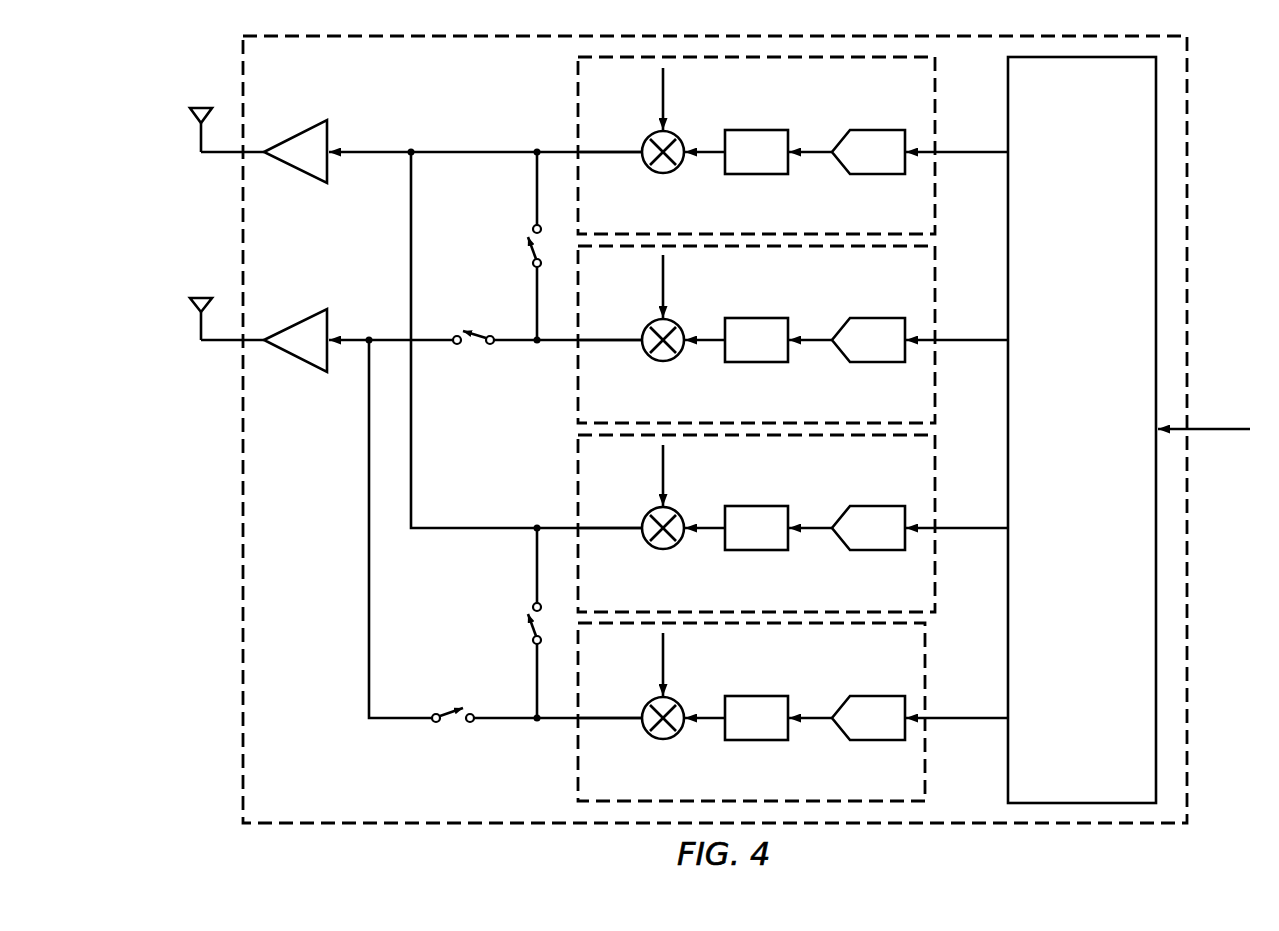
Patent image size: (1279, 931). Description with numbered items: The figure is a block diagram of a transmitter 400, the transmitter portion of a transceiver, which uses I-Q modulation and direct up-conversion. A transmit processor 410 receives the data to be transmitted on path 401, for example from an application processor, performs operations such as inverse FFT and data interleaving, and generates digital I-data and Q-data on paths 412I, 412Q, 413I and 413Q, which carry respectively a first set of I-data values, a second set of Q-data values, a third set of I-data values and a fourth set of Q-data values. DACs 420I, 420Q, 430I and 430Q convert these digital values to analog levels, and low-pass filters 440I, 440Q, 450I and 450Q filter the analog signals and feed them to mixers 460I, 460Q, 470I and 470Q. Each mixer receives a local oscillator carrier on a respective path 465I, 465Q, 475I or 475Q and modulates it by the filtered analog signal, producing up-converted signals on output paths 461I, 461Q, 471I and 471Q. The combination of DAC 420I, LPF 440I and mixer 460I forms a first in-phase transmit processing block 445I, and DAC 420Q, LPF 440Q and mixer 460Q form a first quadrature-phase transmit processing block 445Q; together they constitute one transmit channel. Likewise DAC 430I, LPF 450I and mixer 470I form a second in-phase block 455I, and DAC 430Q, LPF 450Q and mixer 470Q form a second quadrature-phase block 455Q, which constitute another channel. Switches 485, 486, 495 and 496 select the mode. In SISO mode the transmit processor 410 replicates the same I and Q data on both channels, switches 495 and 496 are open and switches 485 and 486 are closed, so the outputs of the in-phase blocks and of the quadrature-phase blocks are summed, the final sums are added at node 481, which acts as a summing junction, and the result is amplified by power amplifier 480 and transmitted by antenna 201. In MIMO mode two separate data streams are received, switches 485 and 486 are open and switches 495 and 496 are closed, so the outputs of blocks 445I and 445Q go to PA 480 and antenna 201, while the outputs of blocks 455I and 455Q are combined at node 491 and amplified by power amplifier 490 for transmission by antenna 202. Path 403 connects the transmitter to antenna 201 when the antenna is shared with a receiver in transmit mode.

The antenna 201 is at (200, 107).
The antenna 202 is at (200, 297).
The transmitter 400 is at (1190, 230).
The path 401 is at (1216, 428).
The path 403 is at (223, 154).
The transmit processor 410 is at (1063, 472).
The path 412I is at (962, 150).
The path 412Q is at (960, 530).
The path 413I is at (962, 338).
The path 413Q is at (960, 720).
The digital-to-analog converter 420I is at (870, 129).
The digital-to-analog converter 420Q is at (875, 550).
The digital-to-analog converter 430I is at (870, 317).
The digital-to-analog converter 430Q is at (875, 740).
The low-pass filter 440I is at (755, 174).
The low-pass filter 440Q is at (755, 550).
The first in-phase transmit processing block 445I is at (577, 98).
The first quadrature-phase transmit processing block 445Q is at (577, 473).
The low-pass filter 450I is at (755, 362).
The low-pass filter 450Q is at (755, 740).
The second in-phase transmit processing block 455I is at (577, 384).
The second quadrature-phase transmit processing block 455Q is at (577, 761).
The mixer 460I is at (667, 173).
The mixer 460Q is at (665, 549).
The path 461I is at (627, 149).
The path 461Q is at (627, 526).
The local oscillator signal path 465I is at (665, 102).
The local oscillator signal path 465Q is at (665, 481).
The mixer 470I is at (667, 361).
The mixer 470Q is at (665, 739).
The path 471I is at (627, 337).
The path 471Q is at (627, 716).
The local oscillator signal path 475I is at (665, 292).
The local oscillator signal path 475Q is at (665, 669).
The power amplifier 480 is at (295, 137).
The node 481 is at (411, 148).
The switch 485 is at (518, 247).
The switch 486 is at (518, 622).
The power amplifier 490 is at (295, 327).
The node 491 is at (369, 337).
The switch 495 is at (474, 348).
The switch 496 is at (453, 724).